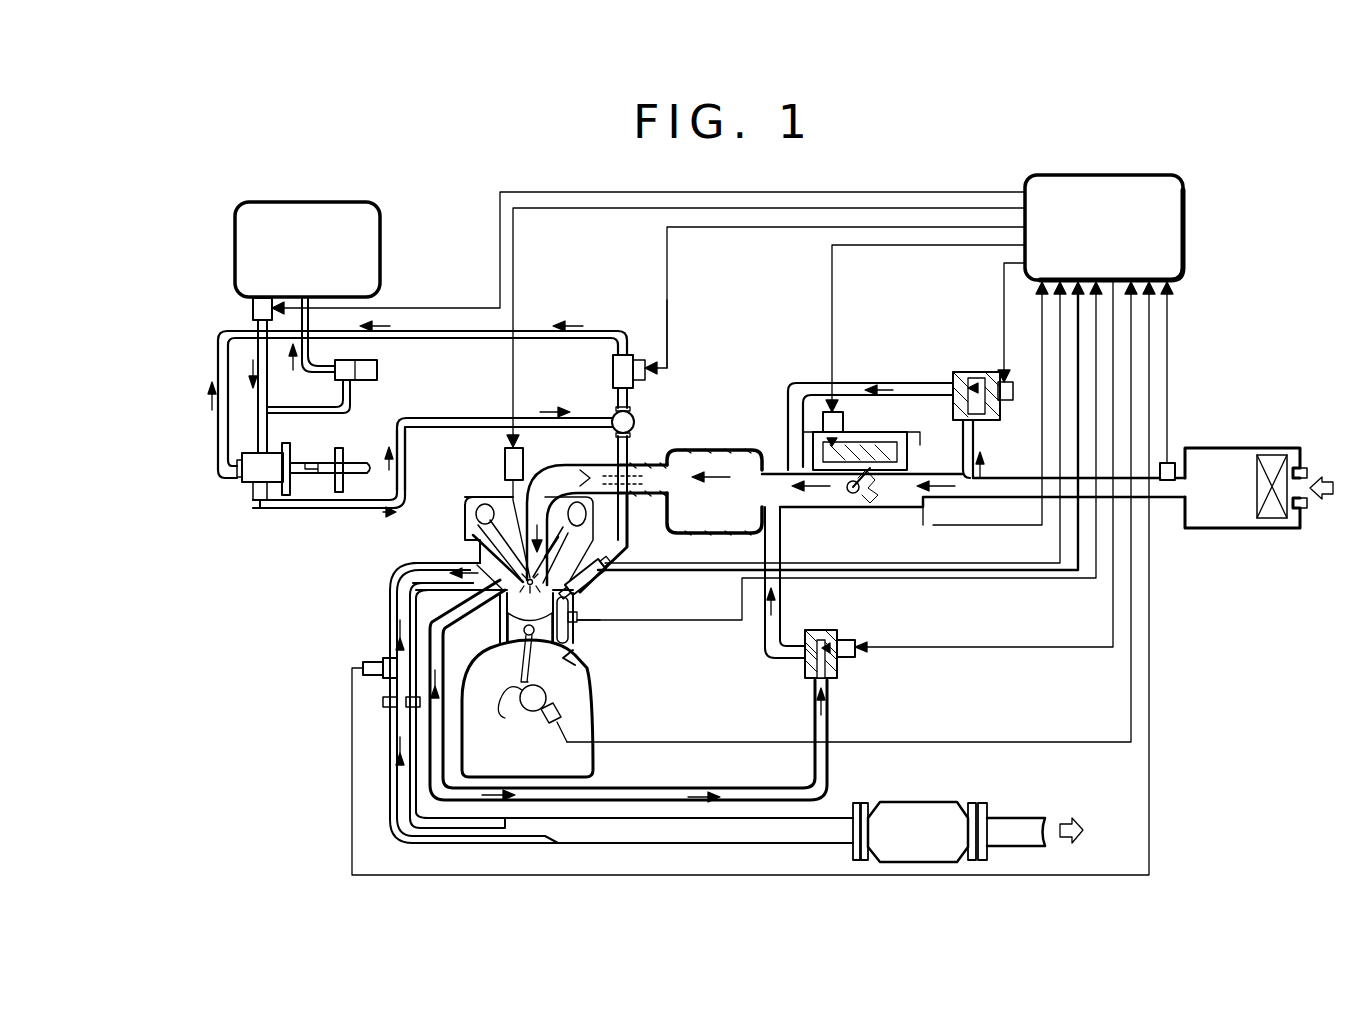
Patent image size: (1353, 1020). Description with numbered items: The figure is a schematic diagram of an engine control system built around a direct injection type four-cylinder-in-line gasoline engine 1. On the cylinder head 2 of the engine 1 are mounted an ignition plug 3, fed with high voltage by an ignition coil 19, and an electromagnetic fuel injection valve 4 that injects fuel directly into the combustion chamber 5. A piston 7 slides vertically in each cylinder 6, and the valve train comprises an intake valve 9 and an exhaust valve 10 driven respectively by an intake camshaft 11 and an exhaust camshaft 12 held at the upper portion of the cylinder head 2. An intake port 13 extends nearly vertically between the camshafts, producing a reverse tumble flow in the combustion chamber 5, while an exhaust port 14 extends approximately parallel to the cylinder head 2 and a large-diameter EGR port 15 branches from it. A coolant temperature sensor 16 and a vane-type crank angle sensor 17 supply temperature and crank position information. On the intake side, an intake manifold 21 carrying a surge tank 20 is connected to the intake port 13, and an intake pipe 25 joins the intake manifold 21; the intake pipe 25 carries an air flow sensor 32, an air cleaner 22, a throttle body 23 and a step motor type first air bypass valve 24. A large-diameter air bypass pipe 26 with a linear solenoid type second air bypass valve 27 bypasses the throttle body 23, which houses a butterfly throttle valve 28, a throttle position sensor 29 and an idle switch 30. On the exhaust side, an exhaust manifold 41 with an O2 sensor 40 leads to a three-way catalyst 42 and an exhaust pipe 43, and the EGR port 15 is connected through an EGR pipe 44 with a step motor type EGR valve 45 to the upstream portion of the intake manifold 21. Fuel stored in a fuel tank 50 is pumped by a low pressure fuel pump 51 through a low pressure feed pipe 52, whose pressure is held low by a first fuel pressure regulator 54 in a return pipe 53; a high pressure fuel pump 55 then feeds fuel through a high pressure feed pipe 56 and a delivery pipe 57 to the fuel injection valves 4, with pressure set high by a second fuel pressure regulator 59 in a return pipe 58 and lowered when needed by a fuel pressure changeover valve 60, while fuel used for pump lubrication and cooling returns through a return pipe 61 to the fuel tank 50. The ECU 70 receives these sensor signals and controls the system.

The engine 1 is at (528, 604).
The cylinder head 2 is at (515, 493).
The ignition plug 3 is at (525, 578).
The fuel injection valve 4 is at (475, 565).
The combustion chamber 5 is at (500, 607).
The cylinder 6 is at (590, 650).
The piston 7 is at (500, 645).
The intake valve 9 is at (610, 555).
The exhaust valve 10 is at (500, 535).
The intake camshaft 11 is at (585, 517).
The exhaust camshaft 12 is at (397, 445).
The intake port 13 is at (522, 488).
The exhaust port 14 is at (470, 565).
The EGR port 15 is at (410, 585).
The coolant temperature sensor 16 is at (585, 630).
The crank angle sensor 17 is at (550, 712).
The ignition coil 19 is at (505, 452).
The surge tank 20 is at (745, 455).
The intake manifold 21 is at (640, 463).
The air cleaner 22 is at (1268, 455).
The throttle body 23 is at (838, 510).
The first air bypass valve 24 is at (845, 423).
The intake pipe 25 is at (1012, 478).
The air bypass pipe 26 is at (905, 383).
The second air bypass valve 27 is at (963, 368).
The throttle valve 28 is at (830, 505).
The throttle position sensor 29 is at (880, 487).
The idle switch 30 is at (858, 498).
The air flow sensor 32 is at (1167, 482).
The O2 sensor 40 is at (363, 665).
The exhaust manifold 41 is at (390, 600).
The three-way catalyst 42 is at (920, 802).
The exhaust pipe 43 is at (830, 817).
The EGR pipe 44 is at (810, 765).
The EGR valve 45 is at (848, 680).
The fuel tank 50 is at (252, 202).
The low pressure fuel pump 51 is at (253, 308).
The low pressure feed pipe 52 is at (270, 440).
The return pipe 53 is at (352, 402).
The first fuel pressure regulator 54 is at (377, 370).
The high pressure fuel pump 55 is at (248, 487).
The high pressure feed pipe 56 is at (292, 510).
The delivery pipe 57 is at (634, 430).
The return pipe 58 is at (538, 331).
The second fuel pressure regulator 59 is at (613, 372).
The fuel pressure changeover valve 60 is at (650, 356).
The return pipe 61 is at (218, 360).
The ECU 70 is at (1190, 200).